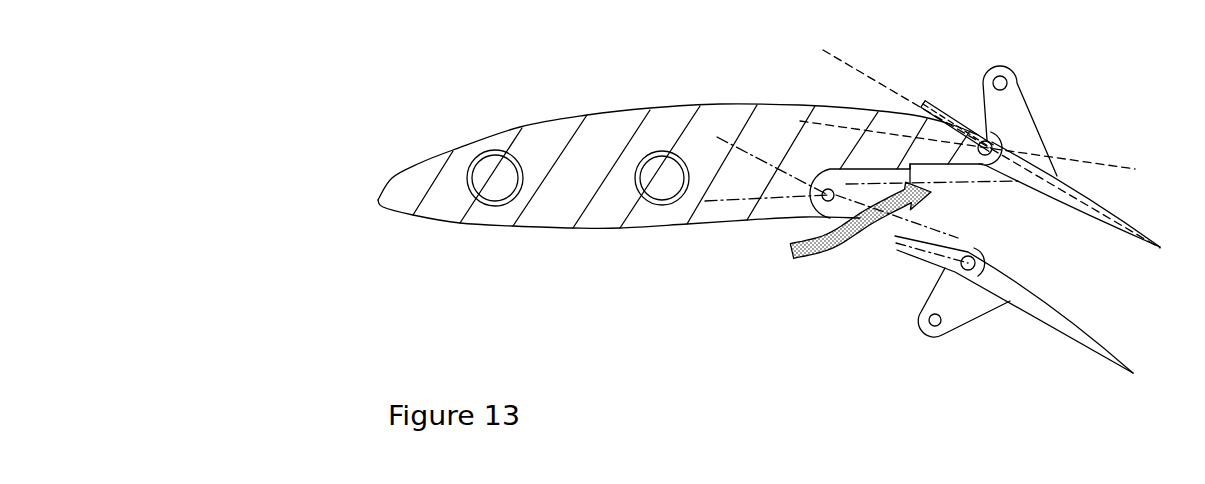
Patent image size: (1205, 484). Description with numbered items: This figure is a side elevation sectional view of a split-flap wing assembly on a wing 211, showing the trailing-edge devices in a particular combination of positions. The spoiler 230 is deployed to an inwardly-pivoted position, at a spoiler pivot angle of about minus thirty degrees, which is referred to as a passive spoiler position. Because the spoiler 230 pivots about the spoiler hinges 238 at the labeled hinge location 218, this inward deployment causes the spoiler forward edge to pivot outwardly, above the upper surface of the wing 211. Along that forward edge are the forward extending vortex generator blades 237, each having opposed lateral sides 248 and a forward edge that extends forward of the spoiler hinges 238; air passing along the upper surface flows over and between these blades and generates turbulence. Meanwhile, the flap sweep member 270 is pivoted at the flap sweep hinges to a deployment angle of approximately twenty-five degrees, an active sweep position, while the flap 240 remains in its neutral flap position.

The wing 211 is at (903, 112).
The vortex generator blade 237 is at (950, 105).
The hinge axis 218 is at (990, 138).
The spoiler hinge 238 is at (1085, 121).
The spoiler 230 is at (1082, 182).
The flap 240 is at (1040, 277).
The lateral side 248 is at (973, 275).
The flap sweep member 270 is at (886, 226).